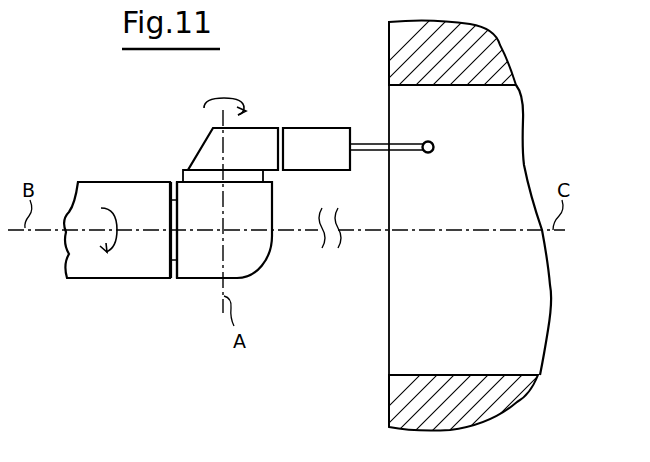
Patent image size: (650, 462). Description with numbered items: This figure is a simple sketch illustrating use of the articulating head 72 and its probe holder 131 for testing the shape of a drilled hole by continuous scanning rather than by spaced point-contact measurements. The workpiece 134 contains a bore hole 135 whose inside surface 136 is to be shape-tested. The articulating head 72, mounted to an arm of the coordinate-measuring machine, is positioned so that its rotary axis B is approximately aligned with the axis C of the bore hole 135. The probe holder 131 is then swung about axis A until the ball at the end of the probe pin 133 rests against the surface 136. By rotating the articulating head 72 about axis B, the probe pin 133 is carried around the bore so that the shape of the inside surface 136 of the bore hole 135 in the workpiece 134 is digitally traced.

The articulating head 72 is at (137, 292).
The probe holder 131 is at (293, 132).
The probe pin 133 is at (367, 142).
The workpiece 134 is at (523, 387).
The bore hole 135 is at (407, 347).
The inside surface of the bore hole 136 is at (430, 87).